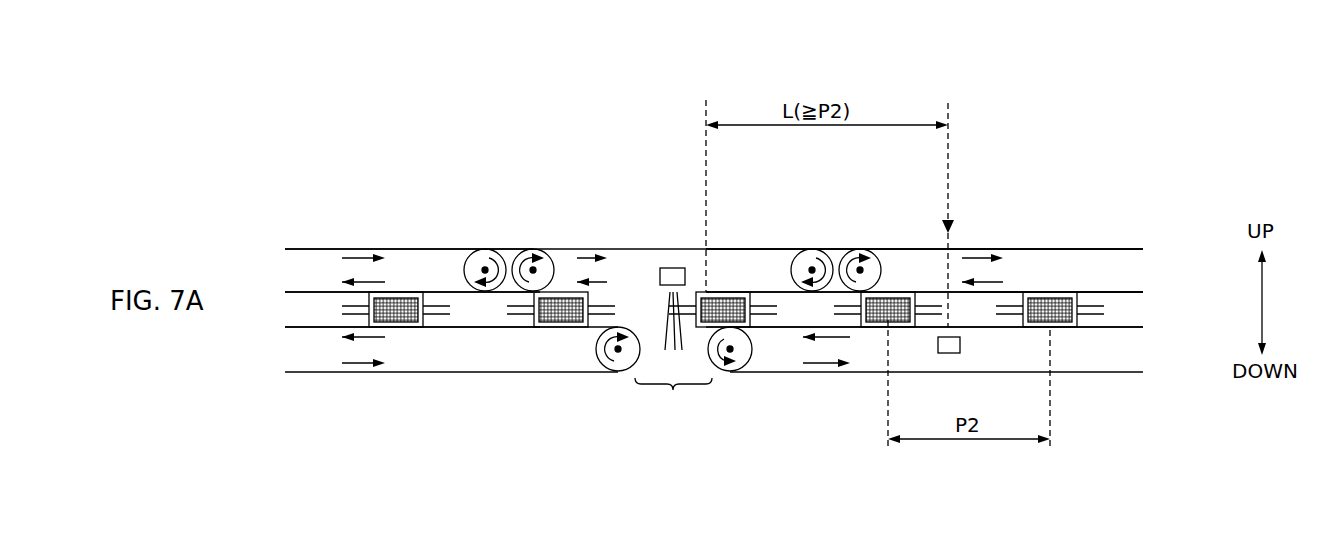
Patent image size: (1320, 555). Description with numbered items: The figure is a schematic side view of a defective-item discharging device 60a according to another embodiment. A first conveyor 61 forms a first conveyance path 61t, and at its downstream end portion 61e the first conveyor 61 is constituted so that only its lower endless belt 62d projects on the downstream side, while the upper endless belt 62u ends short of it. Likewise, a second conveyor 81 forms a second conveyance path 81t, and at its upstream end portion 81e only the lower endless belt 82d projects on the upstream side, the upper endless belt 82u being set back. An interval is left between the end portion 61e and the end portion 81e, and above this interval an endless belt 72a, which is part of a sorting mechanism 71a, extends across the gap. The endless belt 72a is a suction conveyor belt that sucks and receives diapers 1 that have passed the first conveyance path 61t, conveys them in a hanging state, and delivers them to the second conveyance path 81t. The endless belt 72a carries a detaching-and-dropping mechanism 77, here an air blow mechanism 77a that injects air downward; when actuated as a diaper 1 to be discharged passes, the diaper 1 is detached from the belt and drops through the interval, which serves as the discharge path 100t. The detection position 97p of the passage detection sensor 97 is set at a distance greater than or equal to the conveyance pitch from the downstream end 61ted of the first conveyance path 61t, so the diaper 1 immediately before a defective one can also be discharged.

The defective-item discharging device 60a is at (1045, 100).
The first conveyor 61 is at (1100, 235).
The first conveyance path 61t is at (1143, 309).
The downstream end portion of the first conveyor 61e is at (782, 390).
The downstream end of the first conveyance path 61ted is at (706, 88).
The upper endless belt 62u is at (1013, 292).
The lower endless belt 62d is at (972, 330).
The sorting mechanism 71a is at (776, 185).
The endless belt 72a is at (770, 292).
The diaper 1 is at (725, 292).
The detaching-and-dropping mechanism 77 is at (651, 260).
The air blow mechanism 77a is at (673, 321).
The second conveyor 81 is at (352, 225).
The second conveyance path 81t is at (465, 316).
The upstream end portion of the second conveyor 81e is at (580, 390).
The upper endless belt 82u is at (441, 292).
The lower endless belt 82d is at (440, 328).
The passage detection sensor 97 is at (938, 345).
The detection position 97p is at (956, 228).
The discharge path 100t is at (673, 400).